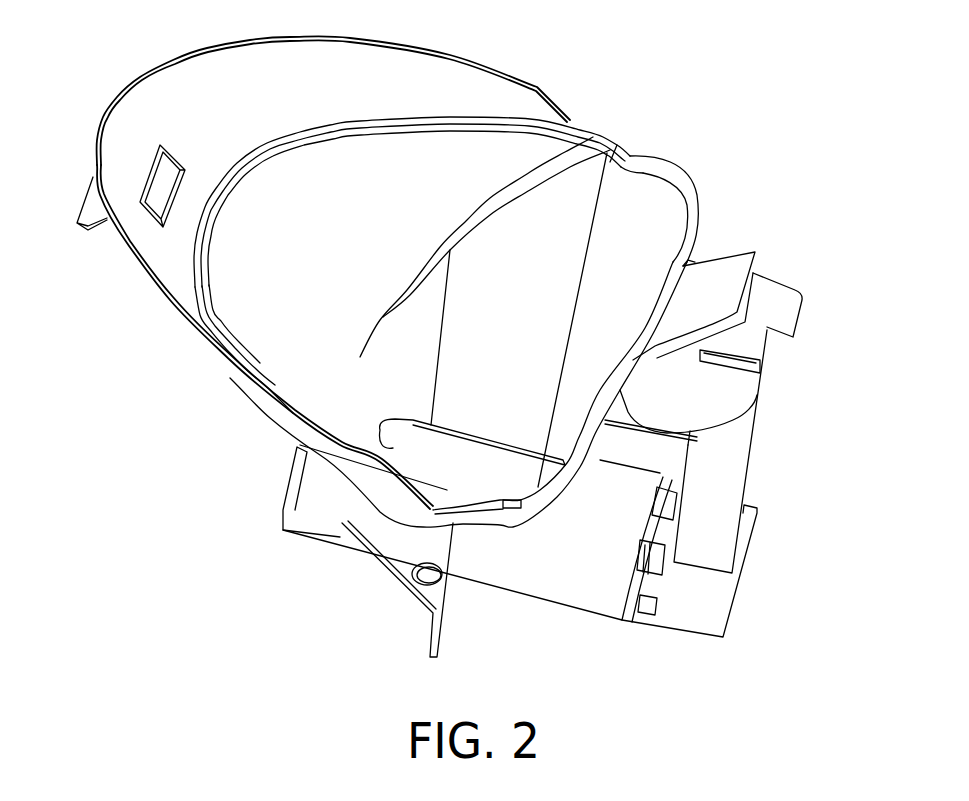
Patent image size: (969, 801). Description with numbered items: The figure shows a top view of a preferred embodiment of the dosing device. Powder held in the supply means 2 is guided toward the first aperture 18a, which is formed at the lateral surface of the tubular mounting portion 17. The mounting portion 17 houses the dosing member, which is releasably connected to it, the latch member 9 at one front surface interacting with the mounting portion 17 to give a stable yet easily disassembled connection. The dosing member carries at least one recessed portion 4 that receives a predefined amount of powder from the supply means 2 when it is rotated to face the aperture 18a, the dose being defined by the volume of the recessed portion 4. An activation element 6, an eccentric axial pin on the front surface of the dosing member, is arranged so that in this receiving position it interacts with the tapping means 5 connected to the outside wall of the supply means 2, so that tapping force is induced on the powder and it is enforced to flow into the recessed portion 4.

The supply means 2 is at (647, 197).
The recessed portion 4 is at (337, 528).
The tapping means 5 is at (737, 460).
The activation element 6 is at (710, 595).
The latch member 9 is at (658, 570).
The mounting portion 17 is at (547, 587).
The first aperture 18a is at (473, 433).